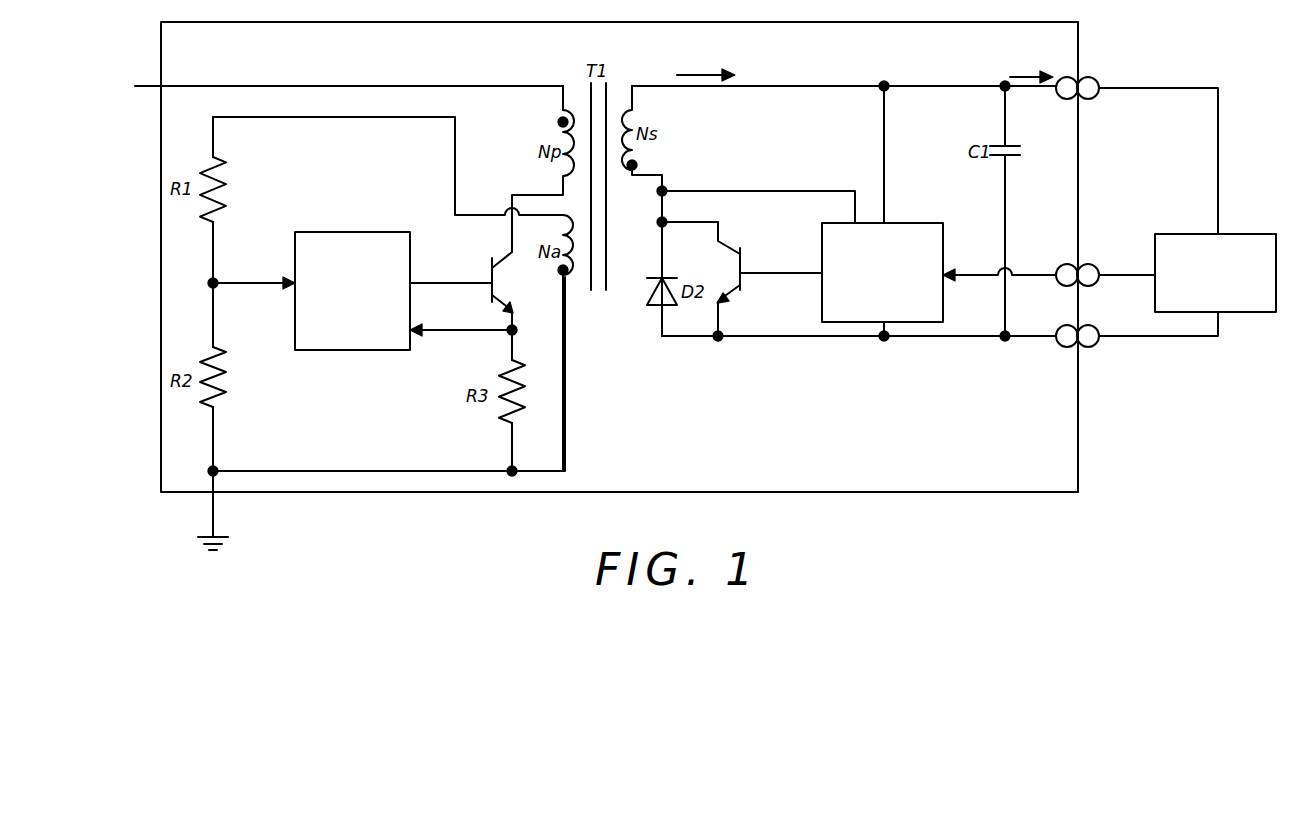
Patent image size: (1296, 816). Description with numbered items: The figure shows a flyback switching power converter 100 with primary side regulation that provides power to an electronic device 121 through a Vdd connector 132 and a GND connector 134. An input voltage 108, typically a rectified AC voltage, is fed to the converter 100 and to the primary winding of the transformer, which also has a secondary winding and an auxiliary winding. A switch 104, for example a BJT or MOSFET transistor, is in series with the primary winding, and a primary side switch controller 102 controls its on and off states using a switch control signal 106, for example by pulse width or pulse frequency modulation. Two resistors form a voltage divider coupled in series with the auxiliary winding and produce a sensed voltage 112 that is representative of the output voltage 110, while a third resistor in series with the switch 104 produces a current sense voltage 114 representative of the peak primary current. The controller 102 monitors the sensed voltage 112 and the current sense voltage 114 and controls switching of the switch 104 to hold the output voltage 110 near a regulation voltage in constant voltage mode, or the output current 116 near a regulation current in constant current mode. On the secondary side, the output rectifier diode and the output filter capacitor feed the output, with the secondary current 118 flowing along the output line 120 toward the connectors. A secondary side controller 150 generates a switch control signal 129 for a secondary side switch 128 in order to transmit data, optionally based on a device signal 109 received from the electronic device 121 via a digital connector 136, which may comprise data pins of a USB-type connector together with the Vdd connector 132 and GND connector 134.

The switching power converter 100 is at (619, 257).
The input voltage 108 is at (151, 86).
The sensed voltage 112 is at (254, 281).
The primary side switch controller 102 is at (352, 291).
The switch control signal 106 is at (429, 280).
The switch 104 is at (480, 274).
The current sense voltage 114 is at (453, 335).
The secondary current ISEC line 118 is at (758, 66).
The secondary winding connection line 120 is at (750, 190).
The output voltage 110 is at (916, 84).
The output current 116 is at (1014, 71).
The Vdd connector 132 is at (1091, 80).
The secondary side switch 128 is at (750, 262).
The switch control signal 129 is at (810, 285).
The secondary side controller 150 is at (882, 272).
The device signal 109 is at (1036, 275).
The digital connector 136 is at (1094, 266).
The GND connector 134 is at (1093, 344).
The electronic device 121 is at (1215, 273).